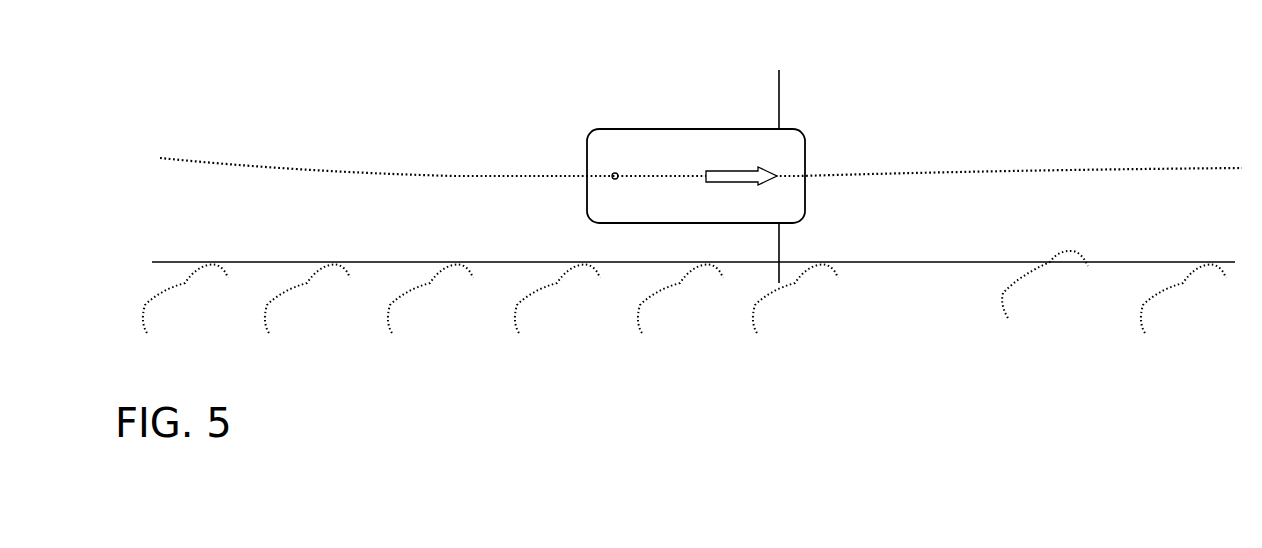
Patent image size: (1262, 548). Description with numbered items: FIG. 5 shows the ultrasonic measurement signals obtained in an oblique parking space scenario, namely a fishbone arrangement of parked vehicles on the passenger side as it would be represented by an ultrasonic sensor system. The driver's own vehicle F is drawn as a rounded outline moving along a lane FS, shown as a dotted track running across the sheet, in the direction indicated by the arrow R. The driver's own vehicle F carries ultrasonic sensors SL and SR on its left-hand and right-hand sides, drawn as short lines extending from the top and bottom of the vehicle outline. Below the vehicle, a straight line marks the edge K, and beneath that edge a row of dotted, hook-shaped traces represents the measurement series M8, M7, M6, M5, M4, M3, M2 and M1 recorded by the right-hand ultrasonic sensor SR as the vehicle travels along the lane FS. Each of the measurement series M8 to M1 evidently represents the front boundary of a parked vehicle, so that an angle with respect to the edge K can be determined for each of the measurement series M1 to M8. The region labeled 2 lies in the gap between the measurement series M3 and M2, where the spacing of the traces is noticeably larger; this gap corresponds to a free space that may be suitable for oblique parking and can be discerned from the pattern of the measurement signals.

The driver's own vehicle F is at (640, 129).
The arrow R is at (740, 176).
The ultrasonic sensor SL is at (779, 93).
The ultrasonic sensor SR is at (779, 243).
The lane FS is at (455, 176).
The edge K is at (1150, 262).
The field 2 is at (927, 309).
The measurement series M1 is at (1187, 296).
The measurement series M2 is at (1056, 282).
The measurement series M3 is at (798, 298).
The measurement series M4 is at (682, 300).
The measurement series M5 is at (559, 300).
The measurement series M6 is at (432, 301).
The measurement series M7 is at (310, 301).
The measurement series M8 is at (187, 301).